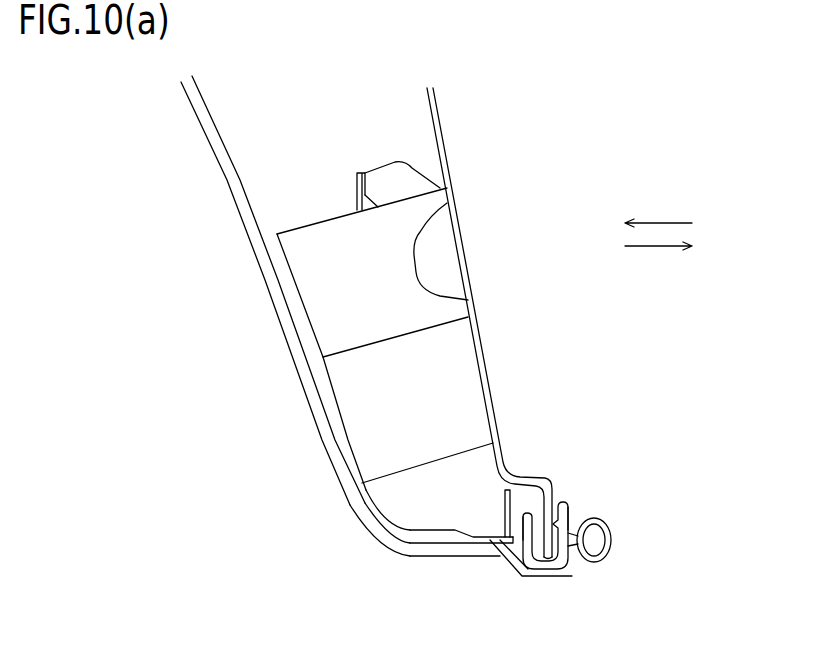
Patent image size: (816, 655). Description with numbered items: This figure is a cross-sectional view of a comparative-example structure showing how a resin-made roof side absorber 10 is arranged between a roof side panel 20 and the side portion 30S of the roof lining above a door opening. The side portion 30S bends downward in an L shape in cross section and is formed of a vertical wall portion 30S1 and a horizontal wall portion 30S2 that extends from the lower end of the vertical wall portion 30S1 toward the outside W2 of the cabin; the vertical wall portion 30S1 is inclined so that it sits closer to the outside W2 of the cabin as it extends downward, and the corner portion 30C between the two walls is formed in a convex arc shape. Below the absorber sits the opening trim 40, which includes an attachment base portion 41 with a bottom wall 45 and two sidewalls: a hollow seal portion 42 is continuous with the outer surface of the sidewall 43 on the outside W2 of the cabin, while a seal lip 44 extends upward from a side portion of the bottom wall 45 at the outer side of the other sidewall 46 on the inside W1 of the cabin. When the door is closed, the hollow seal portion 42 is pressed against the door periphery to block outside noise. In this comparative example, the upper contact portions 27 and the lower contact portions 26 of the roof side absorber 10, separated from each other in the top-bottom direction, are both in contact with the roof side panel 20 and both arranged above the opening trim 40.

The roof side absorber 10 is at (320, 157).
The roof side panel 20 is at (467, 272).
The lower contact portions 26 is at (465, 393).
The upper contact portions 27 is at (437, 200).
The side portion 30S is at (294, 360).
The vertical wall portion 30S1 is at (277, 293).
The corner portion 30C is at (373, 538).
The horizontal wall portion 30S2 is at (450, 548).
The opening trim 40 is at (585, 580).
The attachment base portion 41 is at (543, 554).
The hollow seal portion 42 is at (612, 542).
The sidewall 43 is at (570, 512).
The seal lip 44 is at (513, 560).
The bottom wall 45 is at (550, 572).
The sidewall 46 is at (515, 532).
The inside of the cabin W1 is at (679, 218).
The outside of the cabin W2 is at (679, 247).